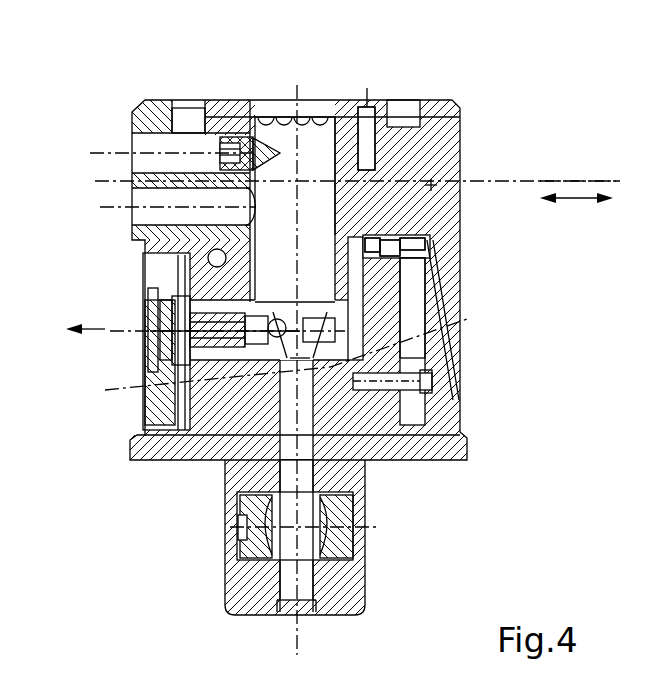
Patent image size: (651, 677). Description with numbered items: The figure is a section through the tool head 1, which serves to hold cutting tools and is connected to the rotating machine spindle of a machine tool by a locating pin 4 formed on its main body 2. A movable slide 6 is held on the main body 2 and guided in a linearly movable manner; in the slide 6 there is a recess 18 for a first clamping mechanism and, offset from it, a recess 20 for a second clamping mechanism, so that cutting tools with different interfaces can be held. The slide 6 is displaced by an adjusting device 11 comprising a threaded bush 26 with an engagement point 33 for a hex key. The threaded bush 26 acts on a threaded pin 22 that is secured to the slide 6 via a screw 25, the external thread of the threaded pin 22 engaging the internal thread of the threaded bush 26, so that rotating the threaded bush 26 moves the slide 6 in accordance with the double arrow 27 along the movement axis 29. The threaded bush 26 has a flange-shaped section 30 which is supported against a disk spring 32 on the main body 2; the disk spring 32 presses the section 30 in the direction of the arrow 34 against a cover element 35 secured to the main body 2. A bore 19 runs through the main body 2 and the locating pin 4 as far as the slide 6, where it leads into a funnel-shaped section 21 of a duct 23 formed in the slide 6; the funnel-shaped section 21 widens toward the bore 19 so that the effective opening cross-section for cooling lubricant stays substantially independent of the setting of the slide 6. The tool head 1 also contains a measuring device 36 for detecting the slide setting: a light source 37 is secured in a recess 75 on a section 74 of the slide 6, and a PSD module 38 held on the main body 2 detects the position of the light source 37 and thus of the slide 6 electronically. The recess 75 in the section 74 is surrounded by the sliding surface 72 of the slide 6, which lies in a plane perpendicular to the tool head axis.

The tool head 1 is at (74, 90).
The main body 2 is at (456, 446).
The locating pin 4 is at (366, 591).
The slide 6 is at (452, 152).
The adjusting device 11 is at (220, 553).
The recess 18 is at (152, 140).
The bore 19 is at (307, 594).
The recess 20 is at (133, 222).
The funnel-shaped section 21 is at (302, 366).
The threaded pin 22 is at (200, 352).
The duct 23 is at (304, 323).
The screw 25 is at (272, 340).
The threaded bush 26 is at (255, 348).
The double arrow 27 is at (577, 200).
The movement axis 29 is at (588, 181).
The section 30 is at (180, 352).
The disk spring 32 is at (165, 345).
The engagement point 33 is at (150, 340).
The arrow 34 is at (67, 314).
The cover element 35 is at (143, 413).
The measuring device 36 is at (498, 183).
The light source 37 is at (375, 232).
The PSD module 38 is at (382, 250).
The sliding surface 72 is at (379, 236).
The section 74 is at (398, 240).
The recess 75 is at (386, 255).